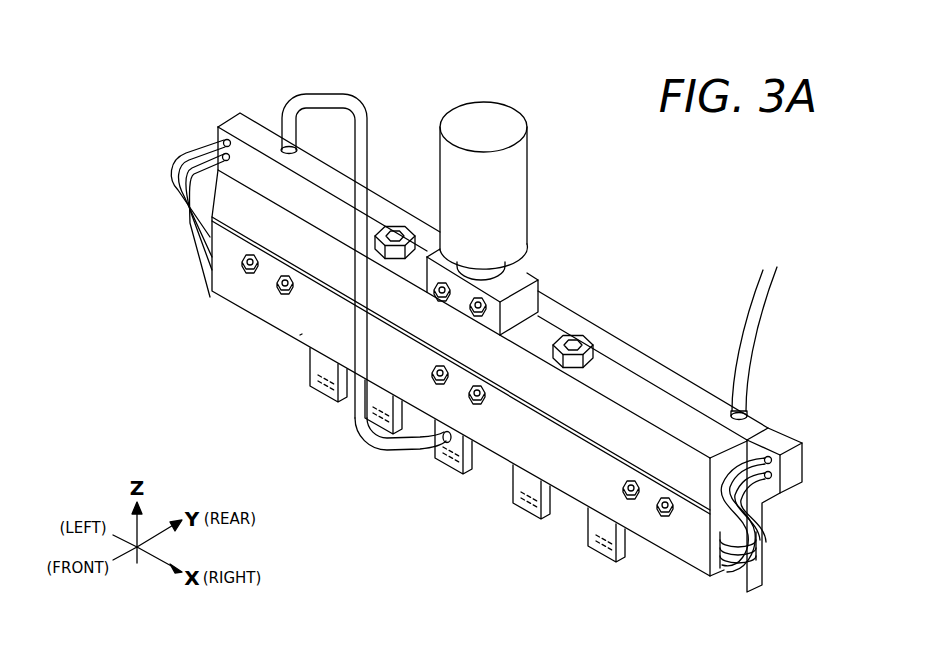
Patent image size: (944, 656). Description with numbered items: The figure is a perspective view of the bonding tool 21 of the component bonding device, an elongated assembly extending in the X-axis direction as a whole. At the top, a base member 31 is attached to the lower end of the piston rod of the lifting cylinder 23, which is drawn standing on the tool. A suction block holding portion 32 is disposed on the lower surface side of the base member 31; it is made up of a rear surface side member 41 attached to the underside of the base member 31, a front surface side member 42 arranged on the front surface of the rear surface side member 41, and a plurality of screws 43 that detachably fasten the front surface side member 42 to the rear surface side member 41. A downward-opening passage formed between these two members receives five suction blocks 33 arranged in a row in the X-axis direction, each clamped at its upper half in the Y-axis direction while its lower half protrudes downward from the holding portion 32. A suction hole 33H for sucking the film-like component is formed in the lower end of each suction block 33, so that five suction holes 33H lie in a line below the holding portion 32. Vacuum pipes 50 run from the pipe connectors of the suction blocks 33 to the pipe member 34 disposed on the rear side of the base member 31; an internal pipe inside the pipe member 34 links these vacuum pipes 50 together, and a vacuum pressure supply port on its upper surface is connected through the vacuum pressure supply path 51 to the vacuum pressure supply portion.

The bonding tool 21 is at (602, 238).
The lifting cylinder 23 is at (522, 181).
The base member 31 is at (659, 398).
The suction block holding portion 32 is at (267, 326).
The suction block 33 is at (320, 388).
The suction hole 33H is at (452, 466).
The pipe member 34 is at (628, 348).
The rear surface side member 41 is at (783, 535).
The front surface side member 42 is at (302, 331).
The screw 43 is at (280, 287).
The vacuum pipe 50 is at (296, 103).
The vacuum pressure supply path 51 is at (758, 307).